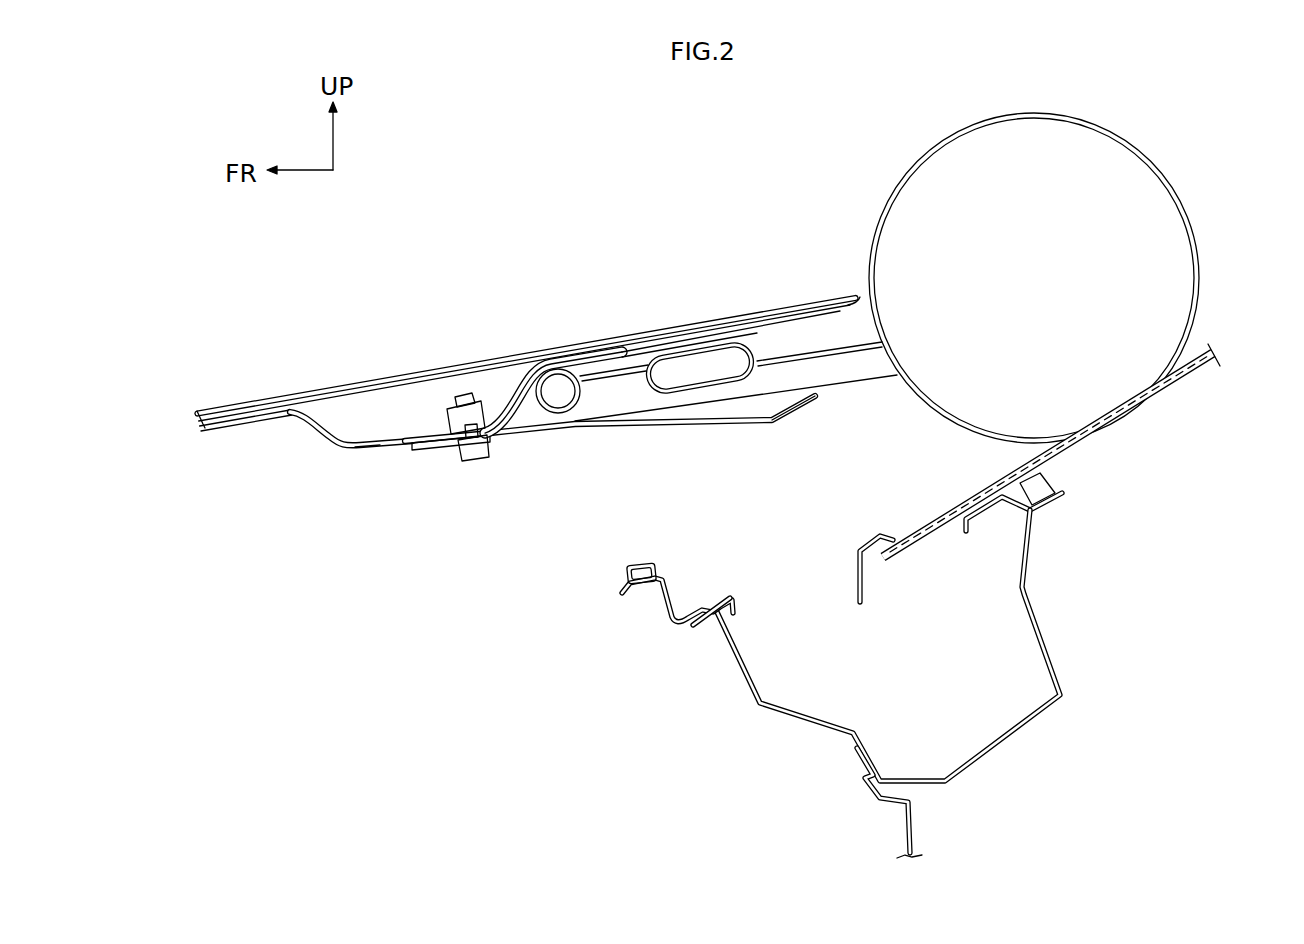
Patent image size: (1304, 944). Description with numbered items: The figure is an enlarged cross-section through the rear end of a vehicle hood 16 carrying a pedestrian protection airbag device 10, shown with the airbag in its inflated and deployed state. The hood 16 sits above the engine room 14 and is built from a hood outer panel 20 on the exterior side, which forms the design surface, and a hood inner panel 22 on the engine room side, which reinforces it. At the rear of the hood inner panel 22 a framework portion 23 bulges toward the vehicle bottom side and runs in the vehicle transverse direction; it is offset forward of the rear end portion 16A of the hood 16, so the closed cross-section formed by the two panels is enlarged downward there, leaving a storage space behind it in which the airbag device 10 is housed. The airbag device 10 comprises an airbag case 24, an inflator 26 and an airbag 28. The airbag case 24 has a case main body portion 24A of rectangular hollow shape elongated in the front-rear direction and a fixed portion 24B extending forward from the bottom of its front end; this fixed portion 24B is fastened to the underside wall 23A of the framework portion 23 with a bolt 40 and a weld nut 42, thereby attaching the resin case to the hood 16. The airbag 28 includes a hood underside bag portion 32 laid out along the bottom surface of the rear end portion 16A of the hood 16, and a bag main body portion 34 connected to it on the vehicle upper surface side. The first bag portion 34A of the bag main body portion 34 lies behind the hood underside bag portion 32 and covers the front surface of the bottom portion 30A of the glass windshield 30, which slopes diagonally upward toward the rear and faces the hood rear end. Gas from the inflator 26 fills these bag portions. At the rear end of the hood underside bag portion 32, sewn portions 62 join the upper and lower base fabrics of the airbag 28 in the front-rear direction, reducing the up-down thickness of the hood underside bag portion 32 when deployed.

The pedestrian protection airbag device 10 is at (547, 383).
The engine room 14 is at (470, 626).
The hood 16 is at (529, 325).
The rear end portion of the hood 16A is at (843, 292).
The hood outer panel 20 is at (304, 428).
The hood inner panel 22 is at (248, 427).
The framework portion 23 is at (325, 438).
The underside wall of the framework portion 23A is at (367, 445).
The airbag case 24 is at (610, 463).
The case main body portion 24A is at (722, 424).
The fixed portion 24B is at (424, 452).
The inflator 26 is at (568, 368).
The airbag 28 is at (866, 400).
The glass windshield 30 is at (1066, 450).
The bottom portion of the glass windshield 30A is at (1152, 399).
The hood underside bag portion 32 is at (775, 395).
The bag main body portion 34 is at (1048, 264).
The first bag portion 34A is at (1128, 140).
The bolt 40 is at (477, 461).
The weld nut 42 is at (450, 398).
The sewn portion 62 is at (790, 343).